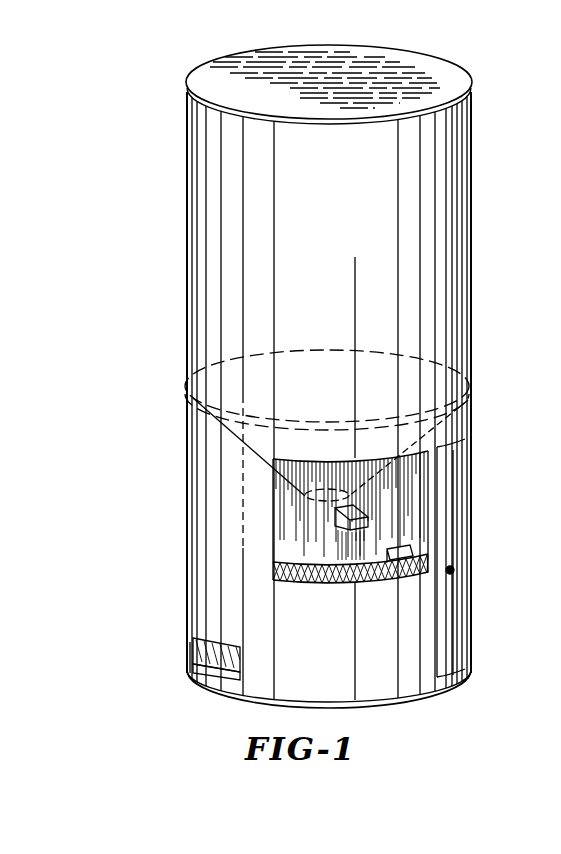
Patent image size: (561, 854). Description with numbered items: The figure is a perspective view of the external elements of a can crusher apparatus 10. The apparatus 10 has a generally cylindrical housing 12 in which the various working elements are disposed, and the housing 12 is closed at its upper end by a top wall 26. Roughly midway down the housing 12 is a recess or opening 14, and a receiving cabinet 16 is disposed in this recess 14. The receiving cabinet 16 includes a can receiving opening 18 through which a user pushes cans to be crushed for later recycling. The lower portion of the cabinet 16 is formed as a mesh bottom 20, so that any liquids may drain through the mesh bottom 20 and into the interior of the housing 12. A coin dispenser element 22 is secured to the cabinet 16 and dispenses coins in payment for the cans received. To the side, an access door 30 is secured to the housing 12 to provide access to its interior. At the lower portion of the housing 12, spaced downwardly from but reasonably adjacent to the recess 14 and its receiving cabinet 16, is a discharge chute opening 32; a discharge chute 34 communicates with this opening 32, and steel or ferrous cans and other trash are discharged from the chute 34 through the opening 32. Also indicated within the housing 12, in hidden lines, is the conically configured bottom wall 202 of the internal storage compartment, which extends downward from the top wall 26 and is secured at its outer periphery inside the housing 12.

The can crusher apparatus 10 is at (180, 220).
The cylindrical housing 12 is at (460, 275).
The recess or opening 14 is at (279, 518).
The receiving cabinet 16 is at (276, 497).
The can receiving opening 18 is at (394, 556).
The mesh bottom 20 is at (334, 581).
The coin dispenser element 22 is at (360, 511).
The top wall 26 is at (437, 76).
The access door 30 is at (470, 615).
The discharge chute opening 32 is at (213, 670).
The discharge chute 34 is at (232, 653).
The conically configured bottom wall 202 is at (221, 471).